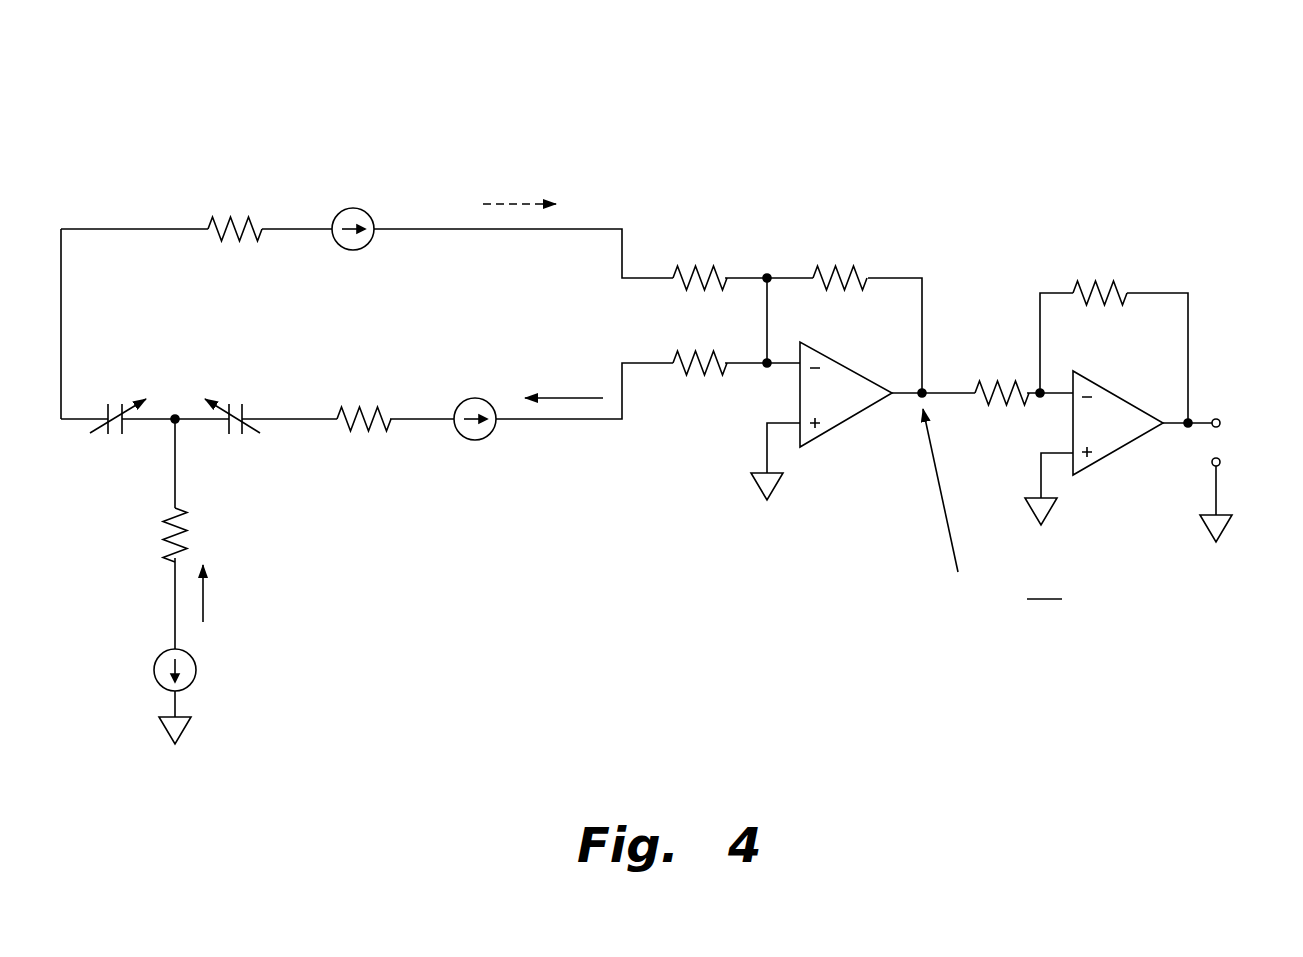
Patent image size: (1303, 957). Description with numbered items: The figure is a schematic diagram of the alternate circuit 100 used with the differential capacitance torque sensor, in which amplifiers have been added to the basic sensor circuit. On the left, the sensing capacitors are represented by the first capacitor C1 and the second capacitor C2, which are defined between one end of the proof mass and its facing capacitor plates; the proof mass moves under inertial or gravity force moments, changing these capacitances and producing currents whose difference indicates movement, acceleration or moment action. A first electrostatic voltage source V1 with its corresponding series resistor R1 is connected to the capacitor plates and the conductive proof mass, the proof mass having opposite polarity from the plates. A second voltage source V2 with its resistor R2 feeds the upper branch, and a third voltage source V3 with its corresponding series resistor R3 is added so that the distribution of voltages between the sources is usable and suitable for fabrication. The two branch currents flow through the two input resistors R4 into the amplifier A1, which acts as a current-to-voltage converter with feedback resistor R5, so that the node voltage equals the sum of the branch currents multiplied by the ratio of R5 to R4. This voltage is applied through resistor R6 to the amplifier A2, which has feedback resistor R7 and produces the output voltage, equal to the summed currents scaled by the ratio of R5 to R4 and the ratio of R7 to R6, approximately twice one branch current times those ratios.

The alternate circuit 100 is at (1134, 116).
The series resistor R1 is at (154, 535).
The resistor R2 is at (235, 212).
The series resistor R3 is at (364, 401).
The resistor R4 is at (700, 305).
The resistor R5 is at (840, 263).
The resistor R6 is at (1002, 376).
The resistor R7 is at (1100, 278).
The first capacitor C1 is at (232, 400).
The second capacitor C2 is at (118, 400).
The first electrostatic voltage source V1 is at (154, 670).
The second voltage source V2 is at (353, 212).
The third voltage source V3 is at (475, 402).
The amplifier A1 is at (821, 421).
The amplifier A2 is at (1094, 448).